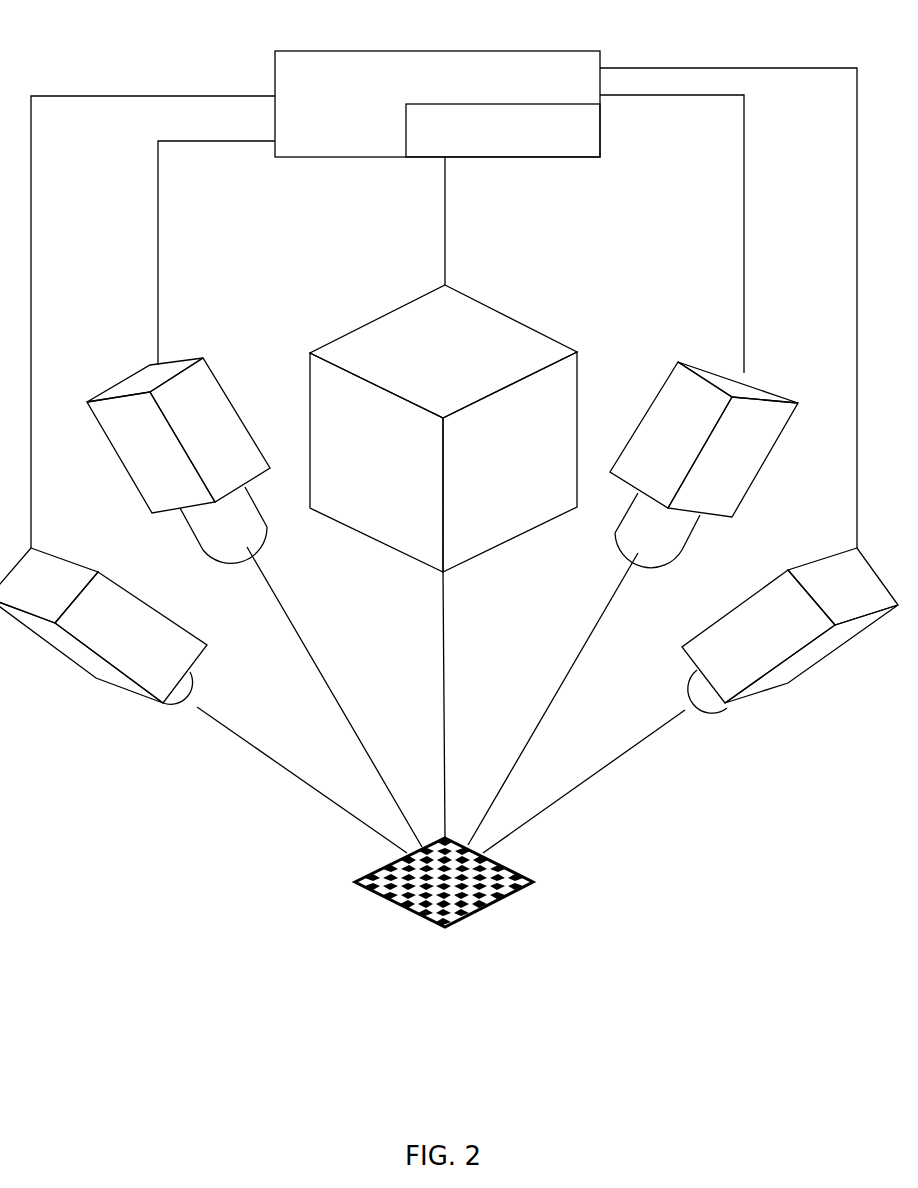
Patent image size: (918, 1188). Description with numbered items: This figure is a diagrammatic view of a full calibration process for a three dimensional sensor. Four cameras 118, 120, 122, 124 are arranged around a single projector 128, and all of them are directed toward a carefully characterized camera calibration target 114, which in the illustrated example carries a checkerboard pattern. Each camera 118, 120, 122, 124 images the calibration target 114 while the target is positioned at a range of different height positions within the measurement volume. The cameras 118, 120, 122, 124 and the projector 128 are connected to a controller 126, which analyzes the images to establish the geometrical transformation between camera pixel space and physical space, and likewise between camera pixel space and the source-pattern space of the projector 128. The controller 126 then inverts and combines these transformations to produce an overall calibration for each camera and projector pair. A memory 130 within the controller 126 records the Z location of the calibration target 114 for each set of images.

The camera calibration target 114 is at (527, 873).
The camera 118 is at (203, 700).
The camera 120 is at (254, 602).
The camera 122 is at (633, 603).
The camera 124 is at (690, 700).
The controller 126 is at (275, 77).
The projector 128 is at (443, 561).
The memory 130 is at (503, 130).